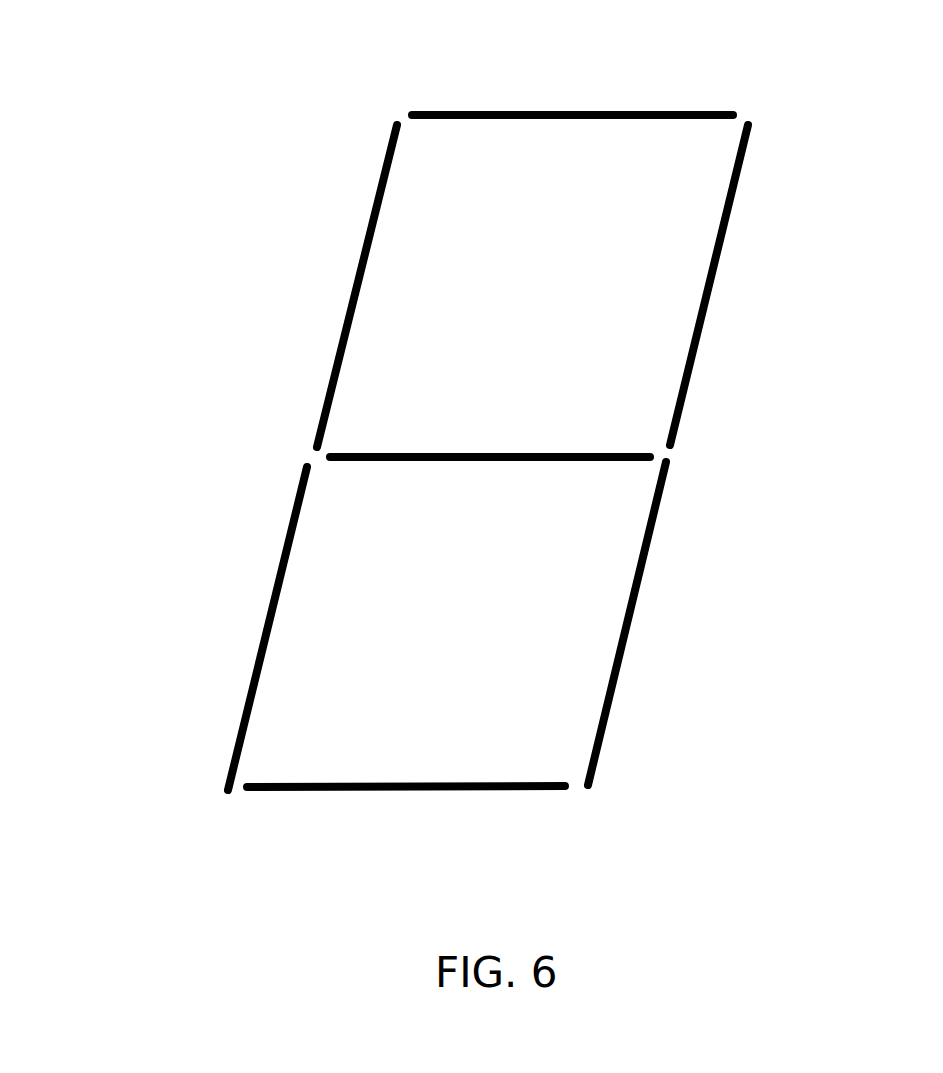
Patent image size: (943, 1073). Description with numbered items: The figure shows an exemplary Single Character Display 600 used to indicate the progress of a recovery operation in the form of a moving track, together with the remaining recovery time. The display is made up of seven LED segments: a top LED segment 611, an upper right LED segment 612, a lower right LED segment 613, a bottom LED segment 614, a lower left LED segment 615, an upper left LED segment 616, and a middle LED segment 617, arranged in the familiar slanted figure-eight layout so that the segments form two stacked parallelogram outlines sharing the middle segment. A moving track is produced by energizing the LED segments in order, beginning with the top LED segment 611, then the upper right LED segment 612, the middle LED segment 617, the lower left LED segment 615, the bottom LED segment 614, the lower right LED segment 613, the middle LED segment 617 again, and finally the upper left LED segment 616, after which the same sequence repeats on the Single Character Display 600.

The Single Character Display 600 is at (177, 160).
The LED segment 611 is at (553, 112).
The LED segment 612 is at (706, 307).
The LED segment 613 is at (625, 635).
The LED segment 614 is at (410, 790).
The LED segment 615 is at (264, 640).
The LED segment 616 is at (346, 318).
The LED segment 617 is at (493, 452).